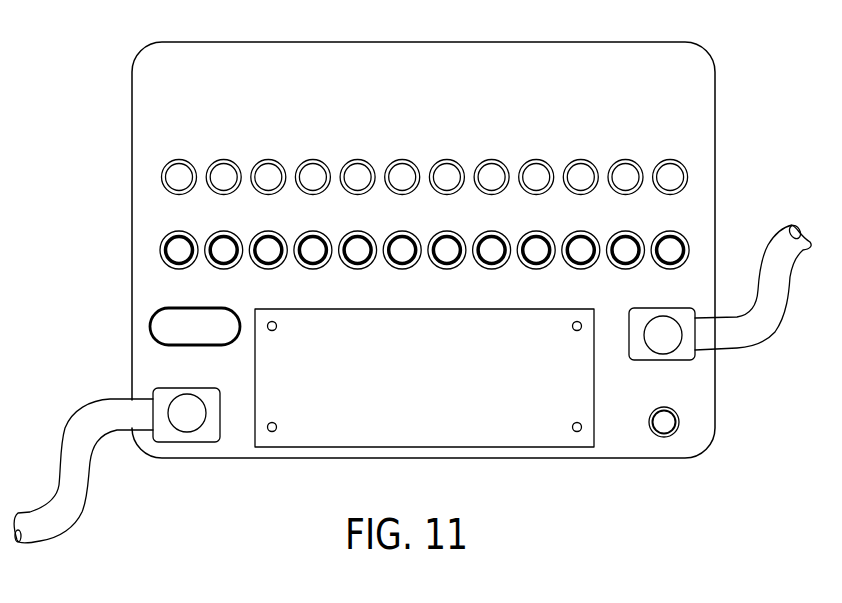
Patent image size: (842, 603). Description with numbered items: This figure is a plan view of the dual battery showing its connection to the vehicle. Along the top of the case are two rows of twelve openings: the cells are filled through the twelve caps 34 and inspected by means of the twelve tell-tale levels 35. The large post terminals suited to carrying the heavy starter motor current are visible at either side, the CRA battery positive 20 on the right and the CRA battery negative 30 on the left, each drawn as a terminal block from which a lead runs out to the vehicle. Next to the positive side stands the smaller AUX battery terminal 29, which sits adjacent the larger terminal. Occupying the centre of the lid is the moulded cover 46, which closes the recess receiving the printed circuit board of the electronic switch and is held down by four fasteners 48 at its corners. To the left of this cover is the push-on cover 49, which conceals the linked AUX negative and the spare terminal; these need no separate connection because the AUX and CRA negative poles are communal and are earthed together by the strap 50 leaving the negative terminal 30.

The CRA battery positive terminal 20 is at (670, 335).
The AUX battery terminal 29 is at (663, 420).
The CRA battery negative terminal 30 is at (185, 423).
The caps 34 is at (543, 263).
The tell-tale levels 35 is at (495, 171).
The moulded cover 46 is at (438, 396).
The fasteners 48 is at (273, 331).
The push-on cover 49 is at (168, 328).
The strap 50 is at (72, 512).